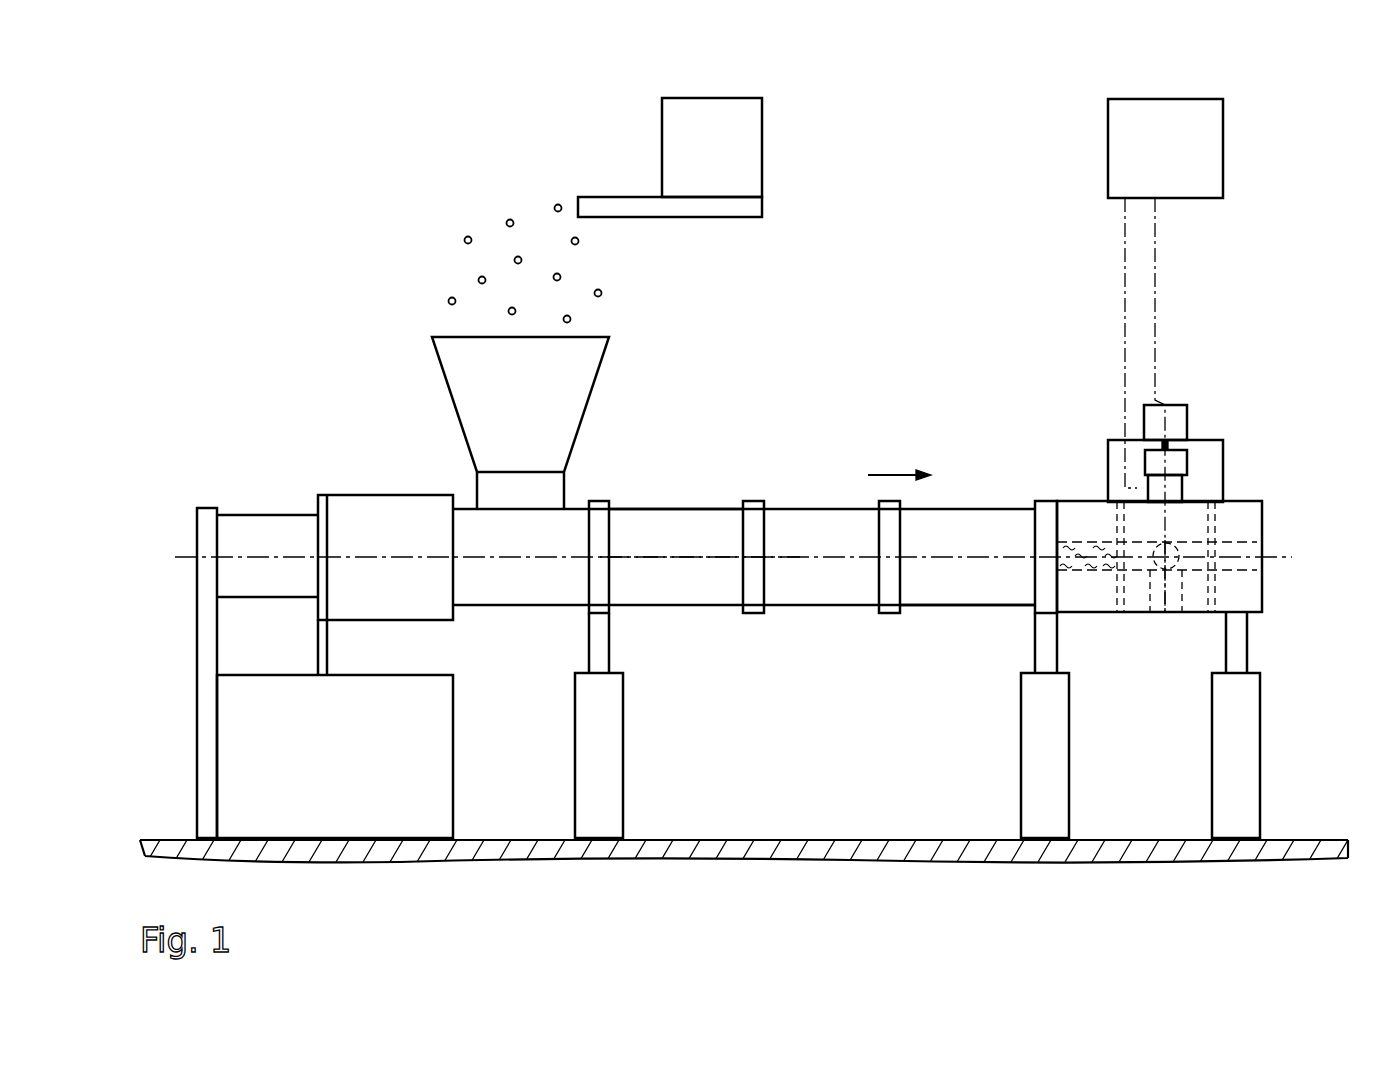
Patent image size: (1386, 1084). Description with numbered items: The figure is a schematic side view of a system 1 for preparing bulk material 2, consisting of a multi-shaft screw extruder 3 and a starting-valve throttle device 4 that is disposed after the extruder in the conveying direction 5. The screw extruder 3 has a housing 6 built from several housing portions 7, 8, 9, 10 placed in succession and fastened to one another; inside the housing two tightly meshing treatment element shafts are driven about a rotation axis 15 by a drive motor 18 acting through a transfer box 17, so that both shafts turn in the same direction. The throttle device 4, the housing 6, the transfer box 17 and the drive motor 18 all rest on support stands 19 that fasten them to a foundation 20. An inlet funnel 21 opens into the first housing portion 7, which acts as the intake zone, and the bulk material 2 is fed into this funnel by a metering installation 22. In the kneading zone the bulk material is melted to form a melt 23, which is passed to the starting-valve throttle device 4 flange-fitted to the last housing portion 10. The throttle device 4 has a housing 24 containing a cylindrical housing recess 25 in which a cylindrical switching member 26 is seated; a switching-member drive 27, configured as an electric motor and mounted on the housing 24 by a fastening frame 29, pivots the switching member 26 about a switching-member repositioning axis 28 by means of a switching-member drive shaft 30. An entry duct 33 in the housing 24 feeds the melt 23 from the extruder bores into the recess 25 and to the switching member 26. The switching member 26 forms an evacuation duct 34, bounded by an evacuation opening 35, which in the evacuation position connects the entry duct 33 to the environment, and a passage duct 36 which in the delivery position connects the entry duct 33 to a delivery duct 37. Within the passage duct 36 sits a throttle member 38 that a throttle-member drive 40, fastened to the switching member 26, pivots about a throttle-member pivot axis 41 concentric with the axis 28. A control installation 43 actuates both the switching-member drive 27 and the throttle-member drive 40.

The system 1 is at (871, 150).
The bulk material 2 is at (478, 280).
The multi-shaft screw extruder 3 is at (757, 490).
The starting-valve throttle device 4 is at (1276, 514).
The conveying direction 5 is at (900, 475).
The housing 6 is at (678, 492).
The housing portion 7 is at (580, 522).
The housing portion 8 is at (715, 522).
The housing portion 9 is at (823, 520).
The housing portion 10 is at (958, 520).
The rotation axis 15 is at (698, 557).
The transfer box 17 is at (358, 508).
The drive motor 18 is at (268, 525).
The support stand 19 is at (598, 643).
The foundation 20 is at (492, 850).
The inlet funnel 21 is at (457, 357).
The metering installation 22 is at (612, 205).
The melt 23 is at (1085, 550).
The housing 24 is at (1248, 536).
The housing recess 25 is at (1222, 511).
The switching member 26 is at (1205, 508).
The switching-member drive 27 is at (1150, 410).
The switching-member repositioning axis 28 is at (1182, 572).
The fastening frame 29 is at (1117, 490).
The switching-member drive shaft 30 is at (1147, 450).
The entry duct 33 is at (1058, 542).
The evacuation duct 34 is at (1130, 606).
The evacuation opening 35 is at (1158, 617).
The passage duct 36 is at (1167, 617).
The delivery duct 37 is at (1252, 565).
The throttle member 38 is at (1197, 567).
The throttle-member drive 40 is at (1172, 488).
The throttle-member pivot axis 41 is at (1168, 465).
The control installation 43 is at (1212, 148).